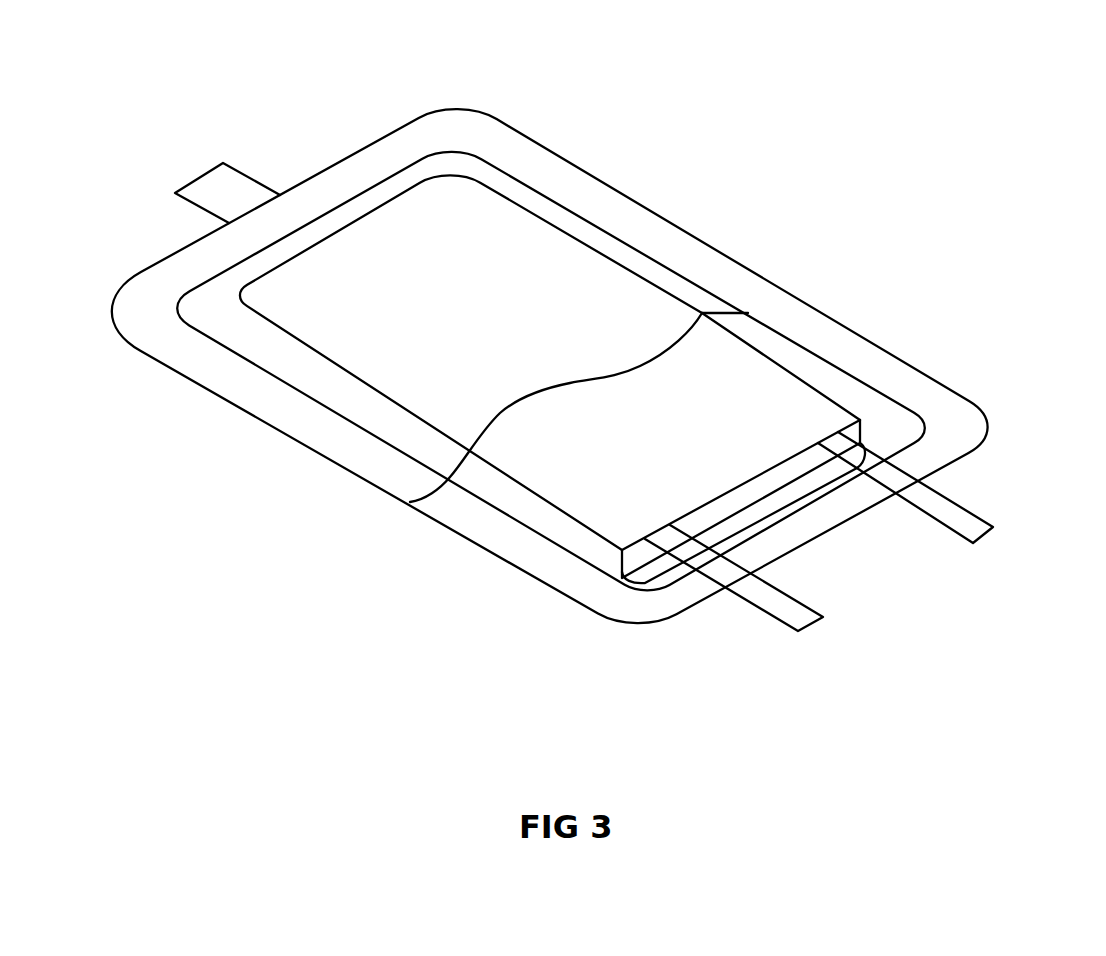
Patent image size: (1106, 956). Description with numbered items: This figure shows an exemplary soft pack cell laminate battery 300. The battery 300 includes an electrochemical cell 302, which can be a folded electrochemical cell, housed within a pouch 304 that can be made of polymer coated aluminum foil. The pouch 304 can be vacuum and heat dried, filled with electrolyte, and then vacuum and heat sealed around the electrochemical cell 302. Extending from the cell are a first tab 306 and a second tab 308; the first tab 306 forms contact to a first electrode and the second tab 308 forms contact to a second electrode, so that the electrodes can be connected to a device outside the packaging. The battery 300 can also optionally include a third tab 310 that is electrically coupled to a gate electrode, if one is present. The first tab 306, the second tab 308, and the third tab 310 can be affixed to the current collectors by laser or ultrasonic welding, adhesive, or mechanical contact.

The soft pack cell laminate battery 300 is at (867, 63).
The electrochemical cell 302 is at (722, 364).
The pouch 304 is at (565, 180).
The first tab 306 is at (803, 617).
The second tab 308 is at (985, 530).
The third tab 310 is at (247, 183).